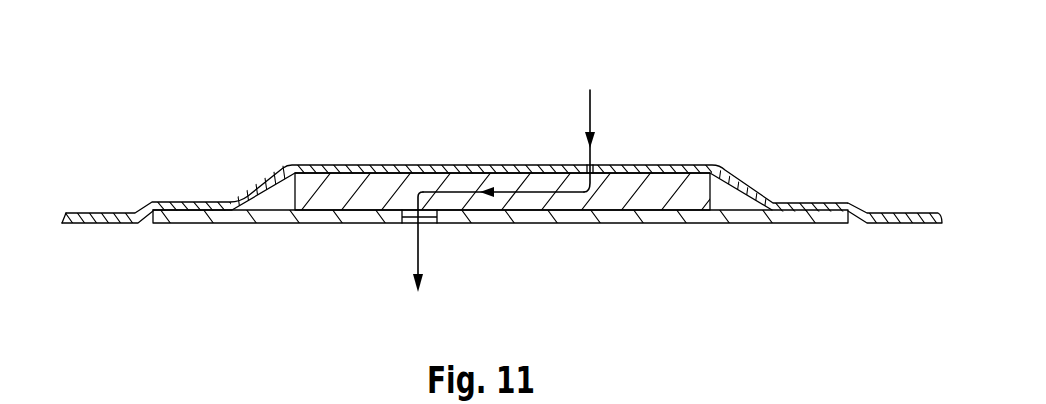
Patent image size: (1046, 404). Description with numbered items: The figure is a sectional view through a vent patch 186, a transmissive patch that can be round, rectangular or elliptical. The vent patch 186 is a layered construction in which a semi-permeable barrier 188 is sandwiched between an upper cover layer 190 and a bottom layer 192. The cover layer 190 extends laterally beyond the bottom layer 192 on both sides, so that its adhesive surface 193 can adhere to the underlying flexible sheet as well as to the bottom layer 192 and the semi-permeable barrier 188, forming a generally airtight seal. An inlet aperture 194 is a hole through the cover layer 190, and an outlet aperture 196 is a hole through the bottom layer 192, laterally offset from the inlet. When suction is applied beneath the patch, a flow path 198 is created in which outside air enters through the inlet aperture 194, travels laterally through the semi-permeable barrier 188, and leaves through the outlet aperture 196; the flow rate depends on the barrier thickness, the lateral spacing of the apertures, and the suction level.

The vent patch 186 is at (287, 70).
The semi-permeable barrier 188 is at (606, 203).
The cover layer 190 is at (100, 223).
The bottom layer 192 is at (688, 215).
The adhesive surface 193 is at (893, 232).
The inlet aperture 194 is at (597, 165).
The outlet aperture 196 is at (411, 212).
The flow path 198 is at (510, 190).